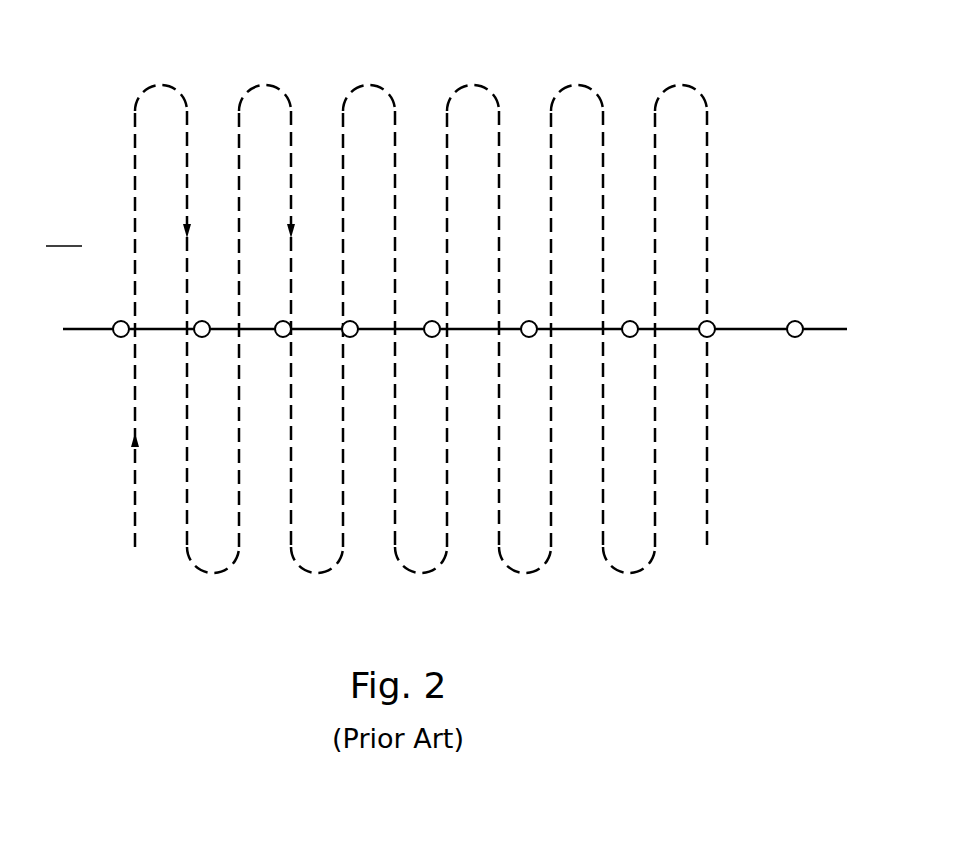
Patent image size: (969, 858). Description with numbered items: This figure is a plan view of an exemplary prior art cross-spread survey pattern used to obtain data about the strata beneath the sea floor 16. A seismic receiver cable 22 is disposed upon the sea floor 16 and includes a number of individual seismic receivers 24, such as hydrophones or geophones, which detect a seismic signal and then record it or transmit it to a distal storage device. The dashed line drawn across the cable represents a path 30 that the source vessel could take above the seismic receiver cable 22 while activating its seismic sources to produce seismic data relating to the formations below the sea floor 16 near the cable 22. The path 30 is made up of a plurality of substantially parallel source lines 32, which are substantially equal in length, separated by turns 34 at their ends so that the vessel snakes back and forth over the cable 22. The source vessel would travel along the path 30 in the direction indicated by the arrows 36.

The sea floor 16 is at (64, 231).
The seismic receiver cable 22 is at (736, 320).
The seismic receivers 24 is at (350, 337).
The path 30 is at (425, 331).
The source lines 32 is at (343, 185).
The turns 34 is at (161, 85).
The arrows 36 is at (289, 237).